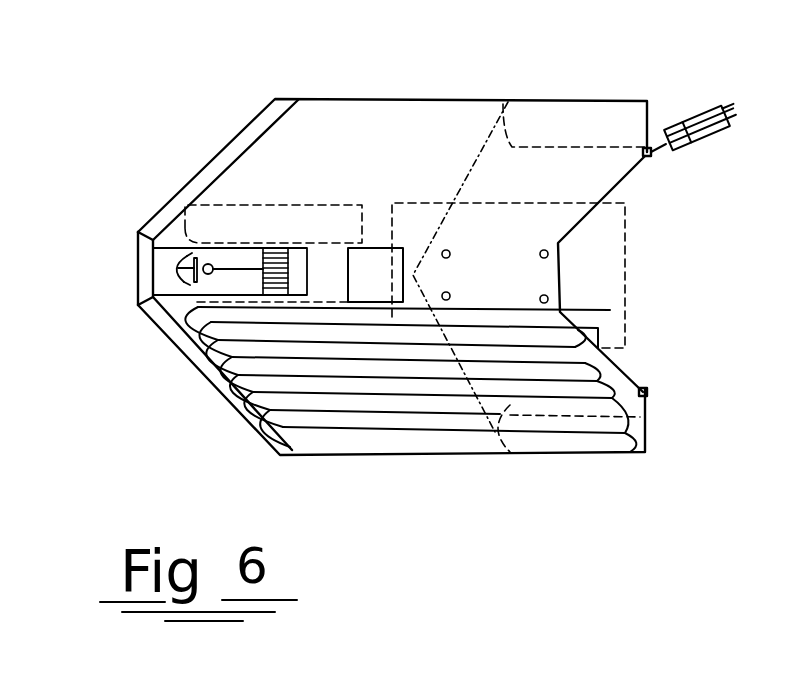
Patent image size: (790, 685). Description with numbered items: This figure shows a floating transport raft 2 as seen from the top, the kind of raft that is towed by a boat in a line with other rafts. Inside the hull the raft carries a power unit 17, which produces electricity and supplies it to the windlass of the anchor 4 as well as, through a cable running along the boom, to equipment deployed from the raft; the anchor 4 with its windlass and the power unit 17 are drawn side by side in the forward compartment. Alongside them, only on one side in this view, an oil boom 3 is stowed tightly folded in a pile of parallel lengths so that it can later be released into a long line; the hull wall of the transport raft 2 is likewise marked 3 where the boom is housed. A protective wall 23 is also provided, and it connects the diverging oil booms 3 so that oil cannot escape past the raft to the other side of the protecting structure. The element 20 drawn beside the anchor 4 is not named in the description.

The transport raft 2 is at (365, 127).
The oil boom 3 is at (680, 117).
The anchor 4 is at (172, 277).
The power unit 17 is at (373, 255).
The coil 20 is at (273, 256).
The protective wall 23 is at (502, 435).